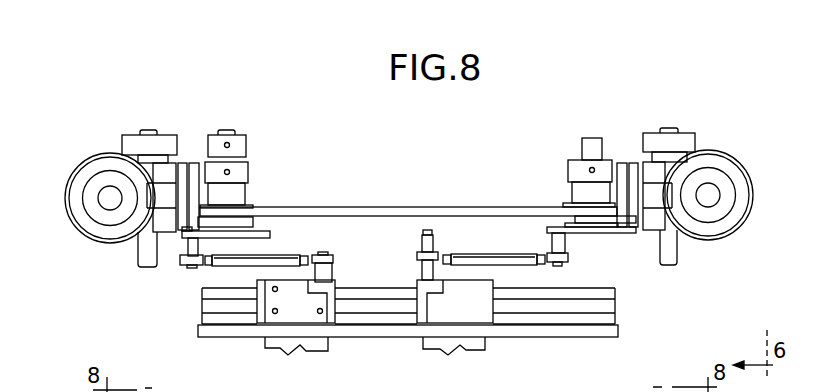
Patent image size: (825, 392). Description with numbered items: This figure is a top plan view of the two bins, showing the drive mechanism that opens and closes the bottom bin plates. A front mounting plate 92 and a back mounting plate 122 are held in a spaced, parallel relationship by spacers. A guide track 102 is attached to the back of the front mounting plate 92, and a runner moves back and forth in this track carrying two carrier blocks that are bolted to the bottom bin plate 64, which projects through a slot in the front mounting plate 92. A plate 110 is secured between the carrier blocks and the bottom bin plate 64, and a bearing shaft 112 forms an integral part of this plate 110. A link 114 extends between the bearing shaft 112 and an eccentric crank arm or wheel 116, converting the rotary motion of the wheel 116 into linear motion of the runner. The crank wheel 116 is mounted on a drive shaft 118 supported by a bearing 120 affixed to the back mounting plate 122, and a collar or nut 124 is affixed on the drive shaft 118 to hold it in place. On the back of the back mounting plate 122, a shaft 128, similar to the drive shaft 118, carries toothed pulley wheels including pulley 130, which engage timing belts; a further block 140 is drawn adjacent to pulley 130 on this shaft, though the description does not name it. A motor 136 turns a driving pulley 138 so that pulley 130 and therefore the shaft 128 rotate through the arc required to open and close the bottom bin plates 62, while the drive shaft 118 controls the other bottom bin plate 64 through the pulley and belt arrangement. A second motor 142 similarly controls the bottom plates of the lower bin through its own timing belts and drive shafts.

The bottom bin plate 62 is at (275, 347).
The bottom bin plate 64 is at (425, 347).
The front mounting plate 92 is at (228, 333).
The guide track 102 is at (603, 295).
The plate 110 is at (416, 283).
The bearing shaft 112 is at (420, 240).
The link 114 is at (488, 252).
The eccentric crank arm or wheel 116 is at (613, 235).
The drive shaft 118 is at (590, 135).
The bearing 120 is at (570, 218).
The back mounting plate 122 is at (343, 209).
The collar or nut 124 is at (572, 170).
The shaft 128 is at (223, 133).
The pulley wheel 130 is at (246, 147).
The motor 136 is at (98, 162).
The driving pulley 138 is at (173, 143).
The lower mounting block 140 is at (250, 170).
The motor 142 is at (737, 175).